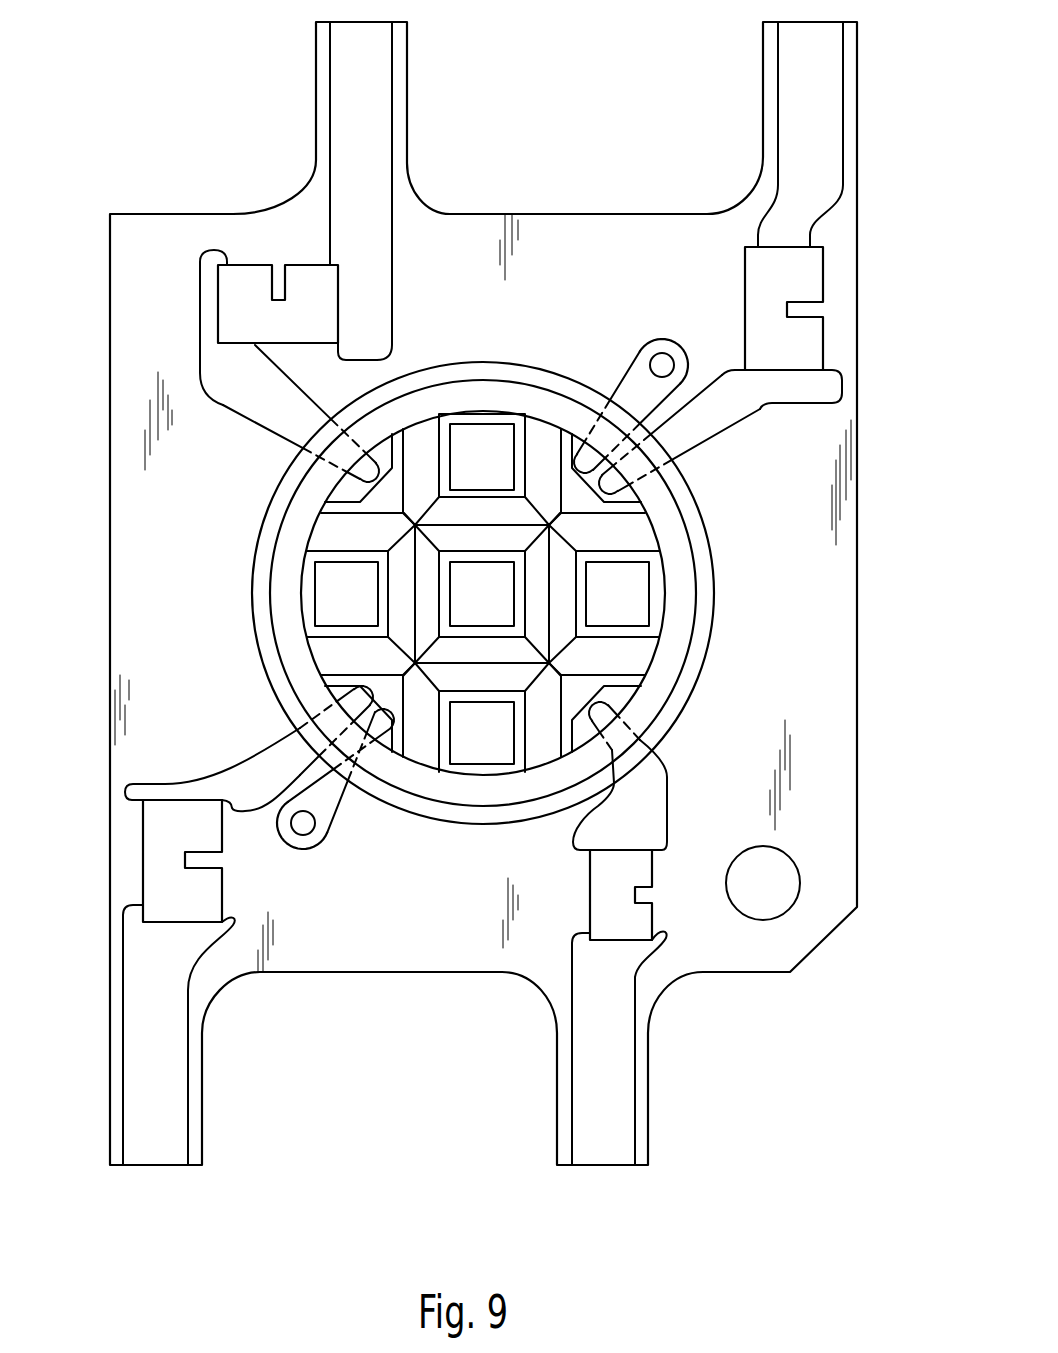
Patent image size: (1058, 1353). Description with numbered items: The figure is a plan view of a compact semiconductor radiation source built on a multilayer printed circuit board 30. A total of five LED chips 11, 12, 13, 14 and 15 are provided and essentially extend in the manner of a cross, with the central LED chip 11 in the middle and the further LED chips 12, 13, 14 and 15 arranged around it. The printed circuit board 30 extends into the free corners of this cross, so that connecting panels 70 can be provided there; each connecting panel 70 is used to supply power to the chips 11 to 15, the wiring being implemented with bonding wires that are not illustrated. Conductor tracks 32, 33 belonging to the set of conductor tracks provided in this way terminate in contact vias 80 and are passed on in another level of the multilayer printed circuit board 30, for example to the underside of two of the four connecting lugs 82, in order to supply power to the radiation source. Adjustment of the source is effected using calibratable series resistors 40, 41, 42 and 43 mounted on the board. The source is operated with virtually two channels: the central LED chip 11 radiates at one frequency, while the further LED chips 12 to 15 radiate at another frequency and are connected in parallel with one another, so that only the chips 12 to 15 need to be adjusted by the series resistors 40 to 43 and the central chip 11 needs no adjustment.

The printed circuit board 30 is at (838, 665).
The connecting lug 82 is at (306, 40).
The series resistor 40 is at (248, 283).
The series resistor 41 is at (810, 273).
The series resistor 42 is at (617, 928).
The series resistor 43 is at (168, 880).
The conductor track 33 is at (663, 340).
The conductor track 32 is at (336, 810).
The contact via 80 is at (310, 848).
The connecting panel 70 is at (347, 489).
The LED chip 11 is at (495, 612).
The LED chip 12 is at (358, 612).
The LED chip 13 is at (495, 473).
The LED chip 14 is at (629, 612).
The LED chip 15 is at (495, 752).